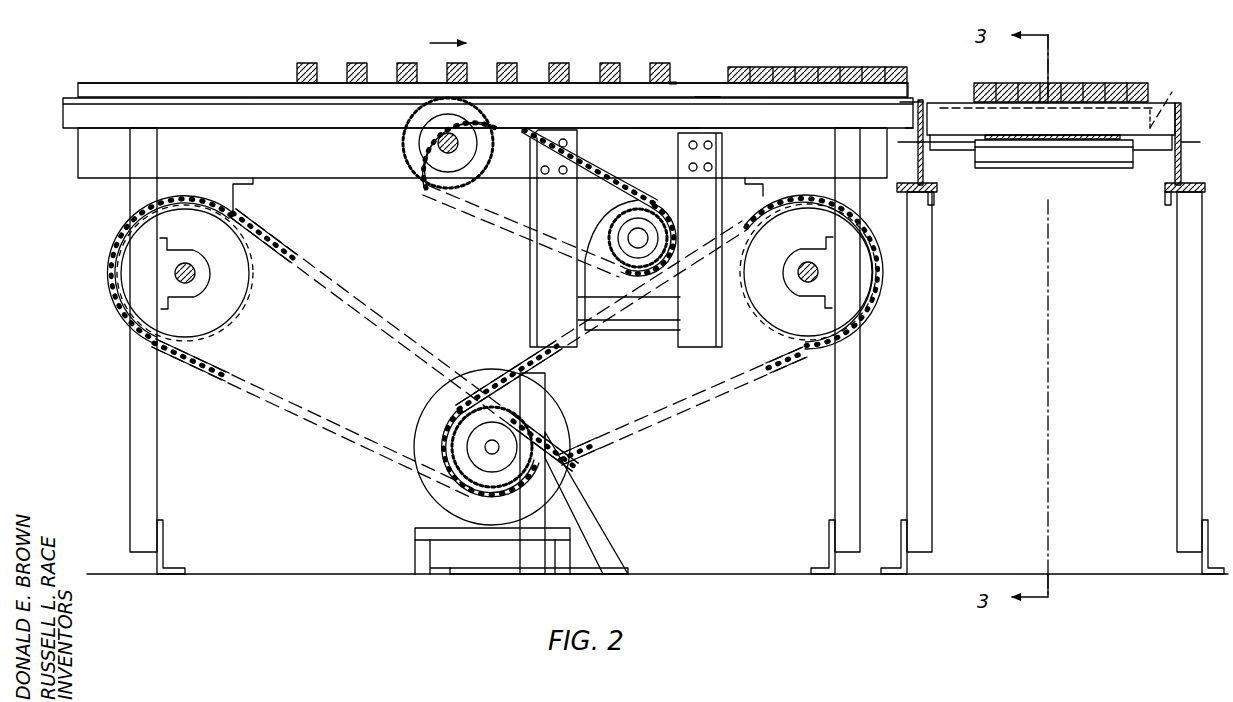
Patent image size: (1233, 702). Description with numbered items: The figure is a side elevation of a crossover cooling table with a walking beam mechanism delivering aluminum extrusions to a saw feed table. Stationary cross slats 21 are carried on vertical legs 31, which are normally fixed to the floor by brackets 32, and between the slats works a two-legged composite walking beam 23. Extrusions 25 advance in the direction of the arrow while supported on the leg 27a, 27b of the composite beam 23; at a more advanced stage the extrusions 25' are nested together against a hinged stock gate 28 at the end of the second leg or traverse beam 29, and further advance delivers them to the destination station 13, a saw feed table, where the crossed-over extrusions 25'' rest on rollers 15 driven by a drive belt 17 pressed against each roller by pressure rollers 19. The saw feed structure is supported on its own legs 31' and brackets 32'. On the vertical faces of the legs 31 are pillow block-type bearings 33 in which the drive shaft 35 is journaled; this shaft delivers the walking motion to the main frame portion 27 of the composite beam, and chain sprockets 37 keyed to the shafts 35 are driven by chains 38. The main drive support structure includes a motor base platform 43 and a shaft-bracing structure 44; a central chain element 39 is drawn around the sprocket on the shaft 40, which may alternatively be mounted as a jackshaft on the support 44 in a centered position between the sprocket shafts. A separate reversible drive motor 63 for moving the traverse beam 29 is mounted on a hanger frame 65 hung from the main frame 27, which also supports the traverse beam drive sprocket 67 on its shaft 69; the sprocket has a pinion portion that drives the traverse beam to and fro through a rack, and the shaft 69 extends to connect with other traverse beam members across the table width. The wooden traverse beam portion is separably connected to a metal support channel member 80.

The destination station 13 is at (1059, 169).
The rollers 15 is at (1178, 115).
The drive belt 17 is at (1003, 160).
The pressure rollers 19 is at (1087, 163).
The stationary cross slats 21 is at (78, 91).
The composite walking beam 23 is at (680, 78).
The extrusions 25 is at (483, 50).
The extrusions 25' is at (817, 50).
The extrusions 25'' is at (1062, 69).
The main frame portion 27 is at (330, 180).
The leg of composite beam 27a is at (198, 83).
The leg of composite beam 27b is at (660, 103).
The hinged stock gate 28 is at (908, 82).
The traverse beam 29 is at (700, 93).
The vertical legs 31 is at (495, 340).
The legs 31' is at (1054, 372).
The brackets 32 is at (496, 547).
The brackets 32' is at (1052, 547).
The pillow block-type bearings 33 is at (197, 296).
The drive shaft 35 is at (195, 268).
The chain sprockets 37 is at (250, 310).
The chains 38 is at (376, 300).
The chain loop 39 is at (445, 425).
The shaft 40 is at (484, 452).
The motor base platform 43 is at (402, 546).
The shaft-bracing structure 44 is at (598, 495).
The reversible drive motor 63 is at (660, 302).
The hanger frame 65 is at (532, 278).
The traverse beam drive sprocket 67 is at (478, 186).
The shaft 69 is at (438, 144).
The metal support channel member 80 is at (63, 112).